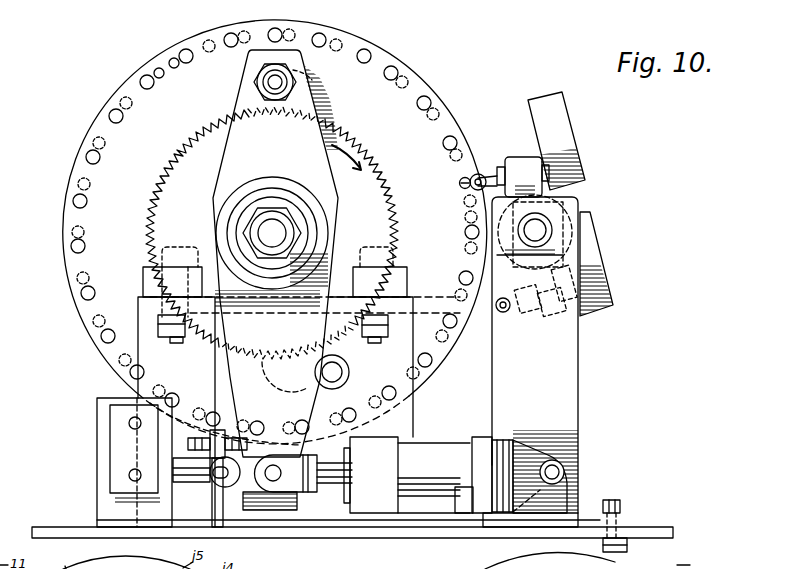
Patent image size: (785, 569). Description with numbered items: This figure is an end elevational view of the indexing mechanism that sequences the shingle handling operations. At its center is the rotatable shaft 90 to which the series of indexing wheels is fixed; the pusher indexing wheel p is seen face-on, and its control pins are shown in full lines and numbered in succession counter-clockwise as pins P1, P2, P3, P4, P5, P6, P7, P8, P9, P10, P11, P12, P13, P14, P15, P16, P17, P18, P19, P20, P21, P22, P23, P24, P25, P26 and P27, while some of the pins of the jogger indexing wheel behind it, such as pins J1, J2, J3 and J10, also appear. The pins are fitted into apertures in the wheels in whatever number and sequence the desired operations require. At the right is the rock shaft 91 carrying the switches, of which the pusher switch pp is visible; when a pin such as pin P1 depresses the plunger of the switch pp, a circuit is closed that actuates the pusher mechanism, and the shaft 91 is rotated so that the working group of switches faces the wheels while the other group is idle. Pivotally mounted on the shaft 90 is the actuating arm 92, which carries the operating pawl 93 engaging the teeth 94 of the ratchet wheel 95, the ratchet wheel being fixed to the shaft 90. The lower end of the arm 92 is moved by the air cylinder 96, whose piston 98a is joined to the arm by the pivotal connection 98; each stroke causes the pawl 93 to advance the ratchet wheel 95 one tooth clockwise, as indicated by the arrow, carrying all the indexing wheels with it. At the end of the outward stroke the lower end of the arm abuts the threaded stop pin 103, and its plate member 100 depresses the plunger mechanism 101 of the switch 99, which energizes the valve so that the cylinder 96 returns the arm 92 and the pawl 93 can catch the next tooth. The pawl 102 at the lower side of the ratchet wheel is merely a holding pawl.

The pusher indexing wheel p is at (122, 208).
The pusher switch pp is at (556, 141).
The pusher indexing pin P1 is at (443, 143).
The pusher indexing pin P2 is at (430, 101).
The pusher indexing pin P3 is at (397, 69).
The pusher indexing pin P4 is at (368, 51).
The pusher indexing pin P5 is at (323, 34).
The pusher indexing pin P6 is at (275, 28).
The pusher indexing pin P7 is at (230, 33).
The pusher indexing pin P8 is at (186, 49).
The pusher indexing pin P9 is at (143, 77).
The pusher indexing pin P10 is at (110, 113).
The pusher indexing pin P11 is at (86, 157).
The pusher indexing pin P12 is at (73, 202).
The pusher indexing pin P13 is at (71, 247).
The pusher indexing pin P14 is at (81, 295).
The pusher indexing pin P15 is at (101, 339).
The pusher indexing pin P16 is at (132, 377).
The pusher indexing pin P17 is at (172, 393).
The pusher indexing pin P18 is at (219, 406).
The pusher indexing pin P19 is at (262, 419).
The pusher indexing pin P20 is at (306, 422).
The pusher indexing pin P21 is at (356, 416).
The pusher indexing pin P22 is at (396, 394).
The pusher indexing pin P23 is at (432, 362).
The pusher indexing pin P24 is at (457, 323).
The pusher indexing pin P25 is at (458, 278).
The pusher indexing pin P26 is at (464, 233).
The pusher indexing pin P27 is at (459, 183).
The jogger indexing pin J1 is at (463, 155).
The jogger indexing pin J2 is at (440, 114).
The jogger indexing pin J3 is at (409, 82).
The jogger indexing pin J10 is at (121, 98).
The rotatable shaft 90 is at (279, 229).
The rock shaft 91 is at (544, 226).
The actuating arm 92 is at (288, 160).
The operating pawl 93 is at (321, 101).
The ratchet teeth 94 is at (192, 134).
The ratchet wheel 95 is at (189, 213).
The air cylinder 96 is at (456, 470).
The pivotal connection 98 is at (277, 482).
The piston 98a is at (340, 486).
The switch 99 is at (110, 468).
The plate member 100 is at (244, 498).
The plunger mechanism 101 is at (206, 480).
The holding pawl 102 is at (291, 348).
The threaded stop pin 103 is at (188, 444).